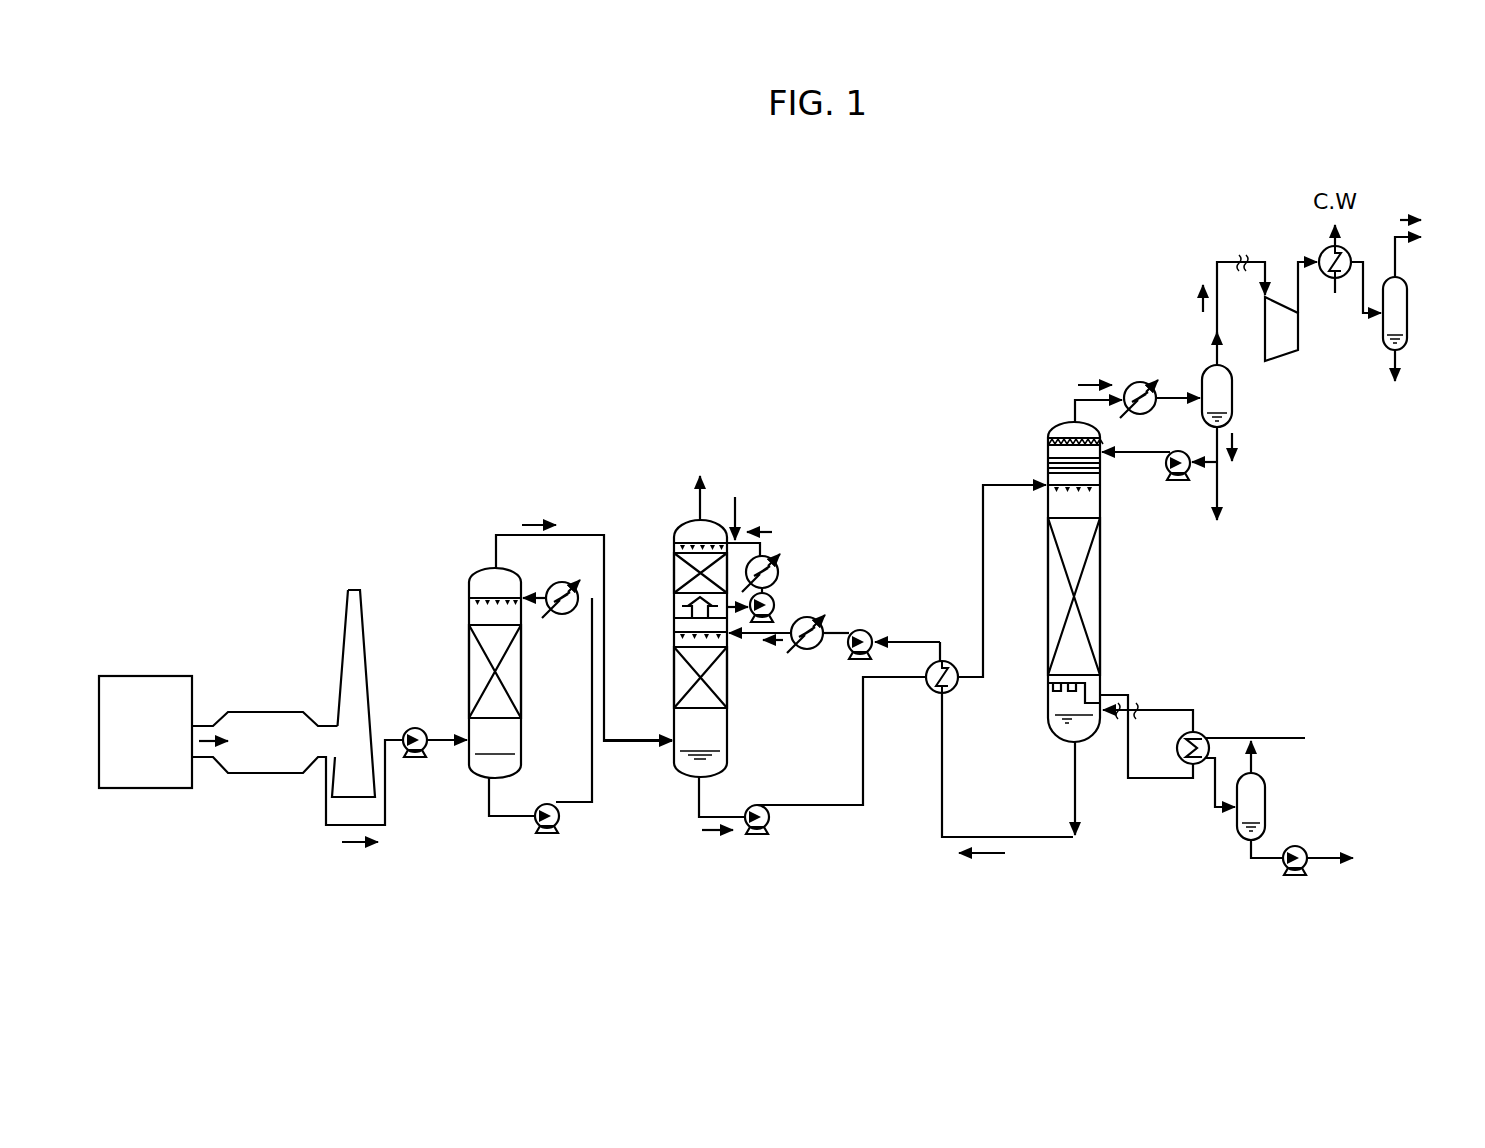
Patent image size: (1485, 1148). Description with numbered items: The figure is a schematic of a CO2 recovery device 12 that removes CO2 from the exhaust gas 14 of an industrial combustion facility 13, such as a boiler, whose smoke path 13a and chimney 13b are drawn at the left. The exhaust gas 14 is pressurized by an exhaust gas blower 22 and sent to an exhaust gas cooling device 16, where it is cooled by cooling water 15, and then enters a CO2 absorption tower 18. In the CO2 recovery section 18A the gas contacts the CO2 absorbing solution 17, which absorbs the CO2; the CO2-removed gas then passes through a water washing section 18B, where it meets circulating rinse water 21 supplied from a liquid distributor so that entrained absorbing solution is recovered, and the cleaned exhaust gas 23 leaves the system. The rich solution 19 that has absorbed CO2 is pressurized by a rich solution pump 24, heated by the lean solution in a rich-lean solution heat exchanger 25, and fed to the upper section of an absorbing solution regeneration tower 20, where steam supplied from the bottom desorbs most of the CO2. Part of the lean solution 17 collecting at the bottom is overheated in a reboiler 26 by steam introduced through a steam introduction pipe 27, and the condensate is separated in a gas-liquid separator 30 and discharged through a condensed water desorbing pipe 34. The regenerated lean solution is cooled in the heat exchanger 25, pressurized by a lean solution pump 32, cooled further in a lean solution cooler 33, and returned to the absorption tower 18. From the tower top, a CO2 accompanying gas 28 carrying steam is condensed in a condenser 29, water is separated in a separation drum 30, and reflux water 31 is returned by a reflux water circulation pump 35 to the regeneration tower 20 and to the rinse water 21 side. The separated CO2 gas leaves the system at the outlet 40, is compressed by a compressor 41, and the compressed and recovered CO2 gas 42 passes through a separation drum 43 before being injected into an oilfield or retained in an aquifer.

The CO2 recovery device 12 is at (744, 268).
The industrial combustion facility 13 is at (170, 676).
The smoke path 13a is at (262, 712).
The chimney 13b is at (345, 627).
The exhaust gas 14 is at (204, 736).
The cooling water 15 is at (547, 602).
The exhaust gas cooling device 16 is at (469, 578).
The CO2 absorbing solution 17 is at (779, 638).
The CO2 absorption tower 18 is at (762, 594).
The CO2 recovery section 18A is at (716, 682).
The water washing section 18B is at (680, 566).
The rich solution 19 is at (713, 832).
The absorbing solution regeneration tower 20 is at (1063, 418).
The circulating rinse water 21 is at (762, 532).
The exhaust gas blower 22 is at (414, 727).
The CO2-removed exhaust gas 23 is at (698, 498).
The rich solution pump 24 is at (770, 819).
The rich-lean solution heat exchanger 25 is at (930, 694).
The reboiler 26 is at (1196, 733).
The steam introduction pipe 27 is at (1280, 736).
The CO2 accompanying gas 28 is at (1092, 383).
The condenser 29 is at (1138, 380).
The separation drum 30 is at (1234, 398).
The reflux water 31 is at (1234, 443).
The lean solution pump 32 is at (866, 626).
The lean solution cooler 33 is at (822, 650).
The condensed water desorbing pipe 34 is at (1330, 856).
The reflux water circulation pump 35 is at (1166, 470).
The compressor inlet 40 is at (1201, 297).
The compressor 41 is at (1293, 352).
The compressed and recovered CO2 gas 42 is at (1399, 220).
The separation drum 43 is at (1409, 297).